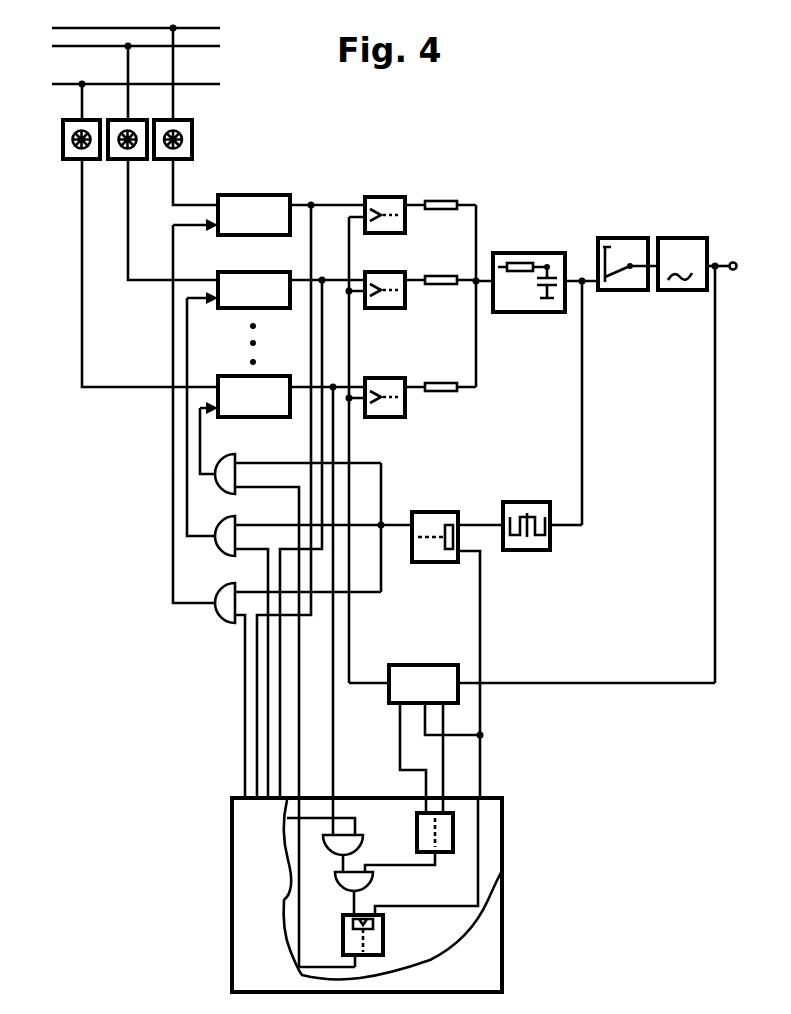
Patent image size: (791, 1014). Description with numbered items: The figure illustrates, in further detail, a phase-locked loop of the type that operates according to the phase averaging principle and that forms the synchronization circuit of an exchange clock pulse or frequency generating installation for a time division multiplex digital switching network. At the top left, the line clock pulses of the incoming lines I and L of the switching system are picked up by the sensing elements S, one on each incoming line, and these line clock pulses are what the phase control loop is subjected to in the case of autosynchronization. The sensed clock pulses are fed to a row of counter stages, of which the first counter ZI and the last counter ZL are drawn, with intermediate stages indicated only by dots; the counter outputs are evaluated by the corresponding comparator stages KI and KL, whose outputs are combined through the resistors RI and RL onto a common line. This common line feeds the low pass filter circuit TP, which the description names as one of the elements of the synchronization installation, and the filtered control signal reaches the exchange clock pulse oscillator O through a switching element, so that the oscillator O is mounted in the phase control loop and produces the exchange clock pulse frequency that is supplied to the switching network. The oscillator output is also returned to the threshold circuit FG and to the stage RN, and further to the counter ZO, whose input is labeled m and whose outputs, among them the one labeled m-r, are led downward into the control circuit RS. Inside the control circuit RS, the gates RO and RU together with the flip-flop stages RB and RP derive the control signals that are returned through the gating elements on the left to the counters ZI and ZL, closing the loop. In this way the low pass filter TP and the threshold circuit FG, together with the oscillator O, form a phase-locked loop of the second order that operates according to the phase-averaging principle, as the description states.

The incoming line I is at (136, 23).
The incoming line L is at (136, 74).
The current sensors S is at (192, 139).
The first counter ZI is at (254, 215).
The last counter ZL is at (254, 396).
The first comparator KI is at (385, 200).
The last comparator KL is at (385, 382).
The first resistor RI is at (440, 188).
The last resistor RL is at (440, 369).
The low pass filter circuit TP is at (529, 268).
The exchange clock pulse oscillator O is at (652, 250).
The counter/divider RN is at (437, 522).
The threshold circuit FG is at (527, 512).
The counter ZO is at (423, 684).
The signal m is at (369, 672).
The signal m-r is at (390, 758).
The control circuit RS is at (490, 983).
The OR gate RO is at (360, 844).
The AND gate RU is at (375, 885).
The flip-flop RB is at (421, 832).
The flip-flop RP is at (382, 935).